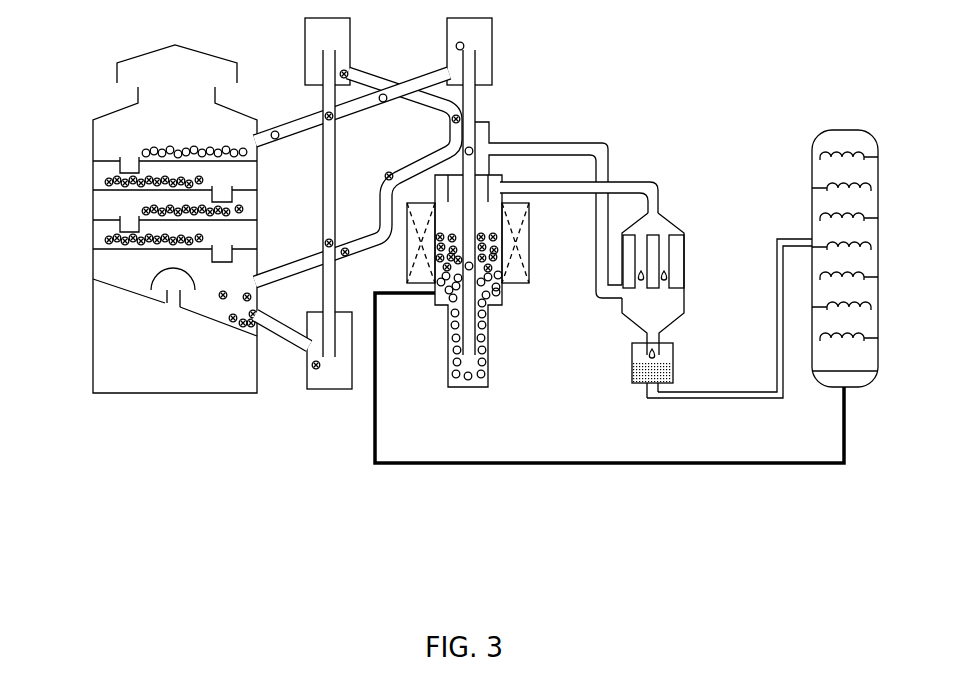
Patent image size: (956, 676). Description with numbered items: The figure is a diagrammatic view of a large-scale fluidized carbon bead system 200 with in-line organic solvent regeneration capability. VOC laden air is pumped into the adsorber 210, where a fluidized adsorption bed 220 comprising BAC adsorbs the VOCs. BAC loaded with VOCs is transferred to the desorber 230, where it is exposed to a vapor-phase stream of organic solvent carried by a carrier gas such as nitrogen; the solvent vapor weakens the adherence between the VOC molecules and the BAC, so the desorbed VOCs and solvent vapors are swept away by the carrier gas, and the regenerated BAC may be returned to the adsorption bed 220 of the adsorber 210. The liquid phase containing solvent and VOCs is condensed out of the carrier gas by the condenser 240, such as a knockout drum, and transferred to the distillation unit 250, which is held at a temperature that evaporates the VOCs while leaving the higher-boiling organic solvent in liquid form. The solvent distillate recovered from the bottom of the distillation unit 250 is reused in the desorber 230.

The fluidized carbon bead system 200 is at (603, 497).
The adsorber 210 is at (178, 393).
The fluidized adsorption bed 220 is at (88, 133).
The desorber 230 is at (468, 387).
The condenser 240 is at (648, 394).
The distillation unit 250 is at (810, 200).